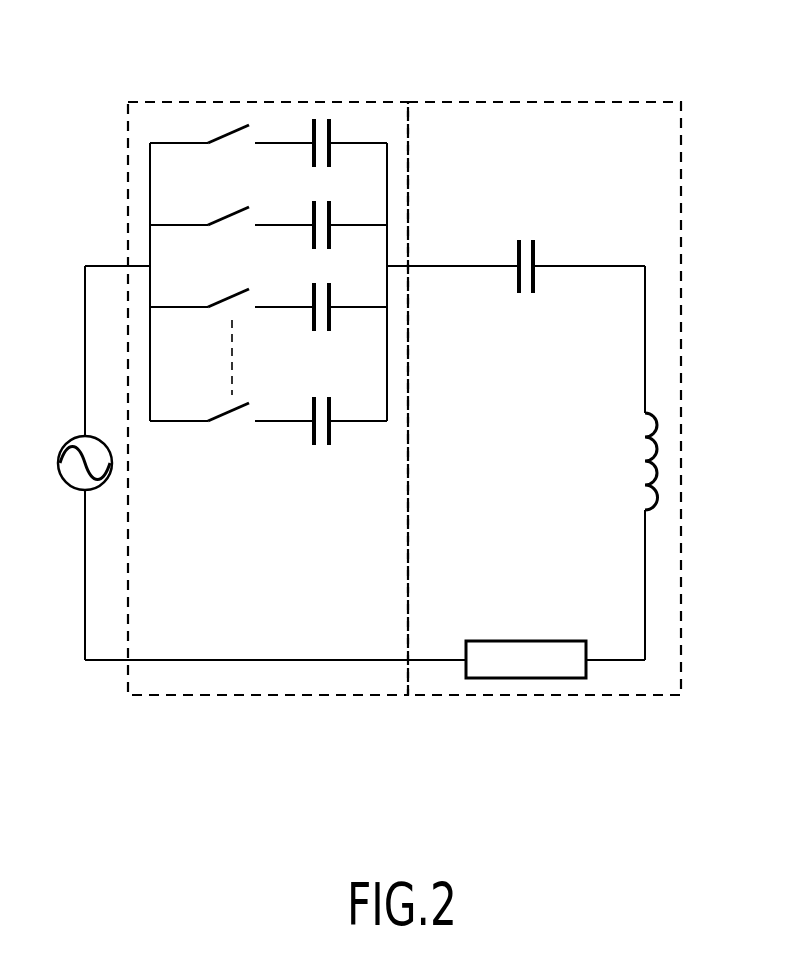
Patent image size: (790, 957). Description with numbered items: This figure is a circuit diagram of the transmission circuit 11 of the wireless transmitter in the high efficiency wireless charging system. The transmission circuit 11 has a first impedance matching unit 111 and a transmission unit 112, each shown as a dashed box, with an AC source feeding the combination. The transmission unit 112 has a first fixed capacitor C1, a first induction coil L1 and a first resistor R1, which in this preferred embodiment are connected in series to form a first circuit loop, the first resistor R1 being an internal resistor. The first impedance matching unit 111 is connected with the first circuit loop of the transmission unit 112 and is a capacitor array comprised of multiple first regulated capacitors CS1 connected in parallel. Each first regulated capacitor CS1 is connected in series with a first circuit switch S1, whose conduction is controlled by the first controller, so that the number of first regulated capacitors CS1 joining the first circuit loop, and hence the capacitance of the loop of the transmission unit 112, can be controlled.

The transmission circuit 11 is at (369, 412).
The first impedance matching unit 111 is at (268, 353).
The transmission unit 112 is at (544, 355).
The first circuit switch S1 is at (199, 293).
The first regulated capacitor CS1 is at (321, 290).
The first fixed capacitor C1 is at (529, 247).
The first induction coil L1 is at (632, 461).
The first resistor R1 is at (526, 642).